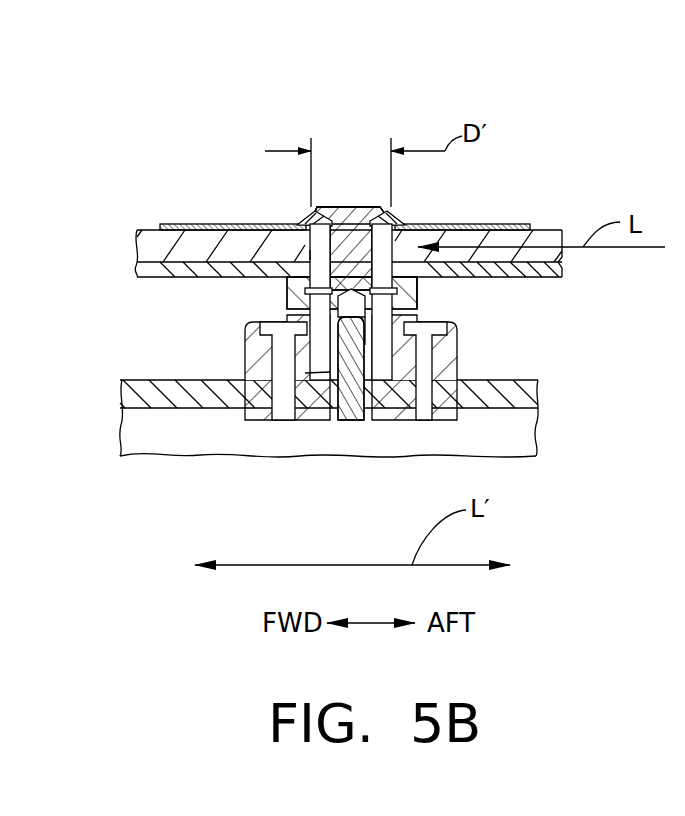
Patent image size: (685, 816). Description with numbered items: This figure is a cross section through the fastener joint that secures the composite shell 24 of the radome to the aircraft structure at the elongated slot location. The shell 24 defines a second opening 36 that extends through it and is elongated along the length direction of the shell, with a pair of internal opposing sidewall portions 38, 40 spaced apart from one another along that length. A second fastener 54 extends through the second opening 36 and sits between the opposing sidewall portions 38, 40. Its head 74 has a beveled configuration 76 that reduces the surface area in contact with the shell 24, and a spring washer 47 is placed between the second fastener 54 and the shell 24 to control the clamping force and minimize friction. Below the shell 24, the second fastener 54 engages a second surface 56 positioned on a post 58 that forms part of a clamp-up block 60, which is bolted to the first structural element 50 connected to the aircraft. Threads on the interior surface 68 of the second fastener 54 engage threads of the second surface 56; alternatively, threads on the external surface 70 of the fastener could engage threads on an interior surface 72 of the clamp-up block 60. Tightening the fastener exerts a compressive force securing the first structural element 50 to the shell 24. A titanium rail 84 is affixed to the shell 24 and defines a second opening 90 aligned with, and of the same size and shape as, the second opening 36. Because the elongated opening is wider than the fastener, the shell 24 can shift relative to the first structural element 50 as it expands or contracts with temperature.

The shell 24 is at (397, 236).
The second opening 36 is at (310, 245).
The internal opposing sidewall portion 38 is at (312, 255).
The internal opposing sidewall portion 40 is at (399, 240).
The spring washer 47 is at (310, 216).
The first structural element 50 is at (493, 397).
The second fastener 54 is at (347, 183).
The second surface 56 is at (366, 348).
The post 58 is at (352, 405).
The clamp-up block 60 is at (258, 360).
The interior surface 68 is at (350, 303).
The external surface 70 is at (366, 329).
The interior surface 72 is at (330, 372).
The head 74 is at (345, 212).
The beveled configuration 76 is at (304, 218).
The rail 84 is at (547, 270).
The second opening 90 is at (420, 283).